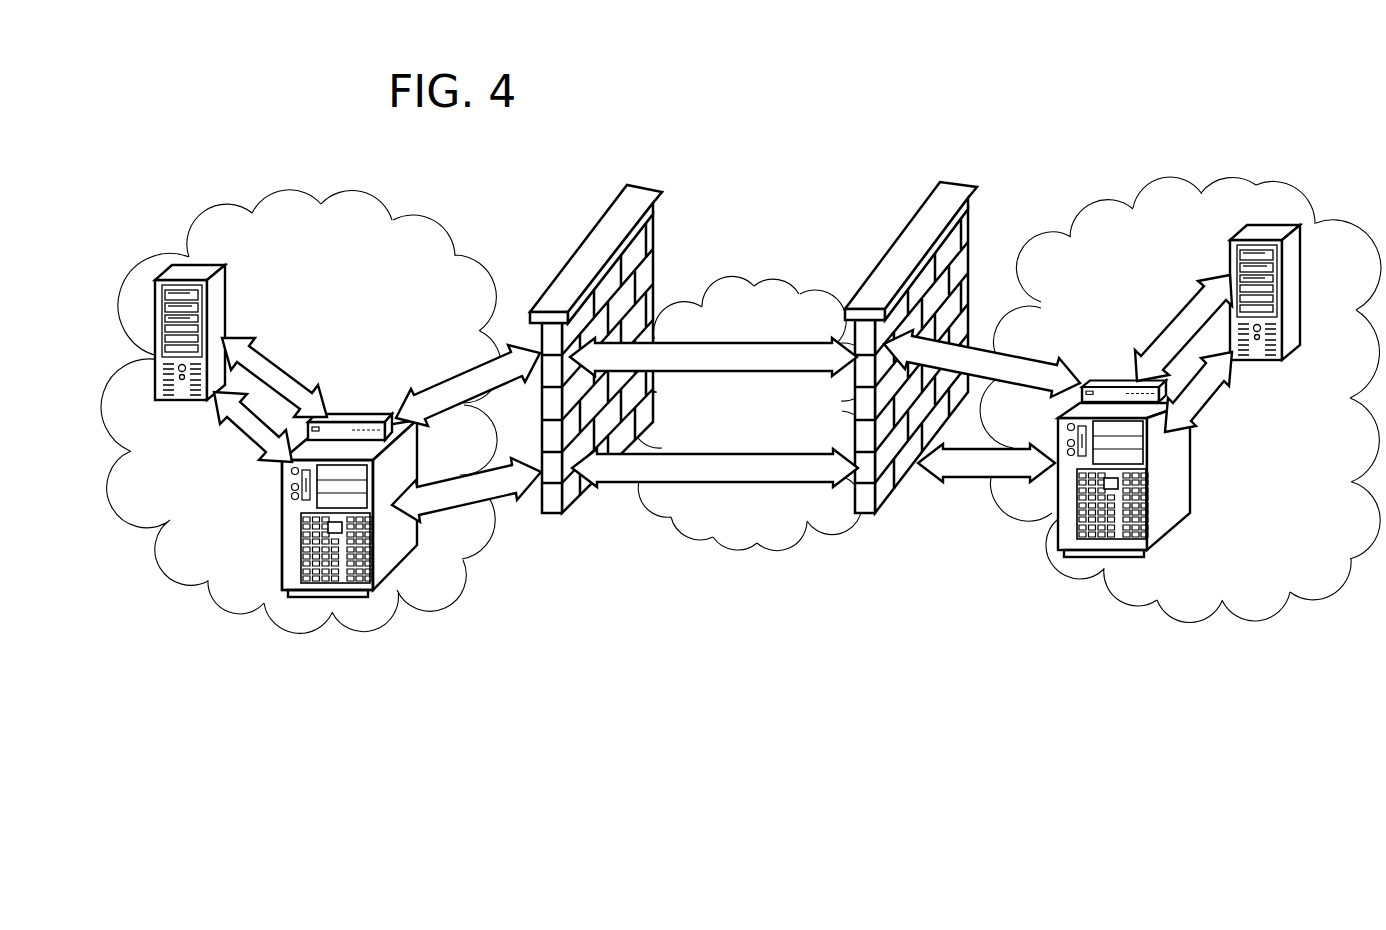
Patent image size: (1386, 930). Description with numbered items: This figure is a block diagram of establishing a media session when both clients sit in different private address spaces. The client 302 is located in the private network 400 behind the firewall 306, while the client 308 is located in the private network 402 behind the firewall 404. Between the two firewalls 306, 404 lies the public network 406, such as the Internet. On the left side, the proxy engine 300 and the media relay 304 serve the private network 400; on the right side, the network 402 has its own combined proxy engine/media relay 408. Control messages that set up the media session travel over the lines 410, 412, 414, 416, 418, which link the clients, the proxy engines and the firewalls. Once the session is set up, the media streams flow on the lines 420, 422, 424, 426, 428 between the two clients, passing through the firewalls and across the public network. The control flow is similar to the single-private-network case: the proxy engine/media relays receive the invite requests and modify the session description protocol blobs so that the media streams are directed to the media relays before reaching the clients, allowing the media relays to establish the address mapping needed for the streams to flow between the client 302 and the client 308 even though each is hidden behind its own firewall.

The proxy engine 300 is at (390, 553).
The client 302 is at (195, 268).
The media relay 304 is at (327, 525).
The firewall 306 is at (648, 177).
The client 308 is at (1248, 230).
The private network 400 is at (293, 220).
The private network 402 is at (1170, 190).
The firewall 404 is at (950, 193).
The public network 406 is at (767, 293).
The proxy engine/media relay 408 is at (1033, 520).
The line 410 is at (240, 417).
The line 412 is at (498, 487).
The line 414 is at (728, 467).
The line 416 is at (940, 457).
The line 418 is at (1188, 392).
The line 420 is at (287, 377).
The line 422 is at (523, 333).
The line 424 is at (683, 353).
The line 426 is at (985, 375).
The line 428 is at (1193, 307).